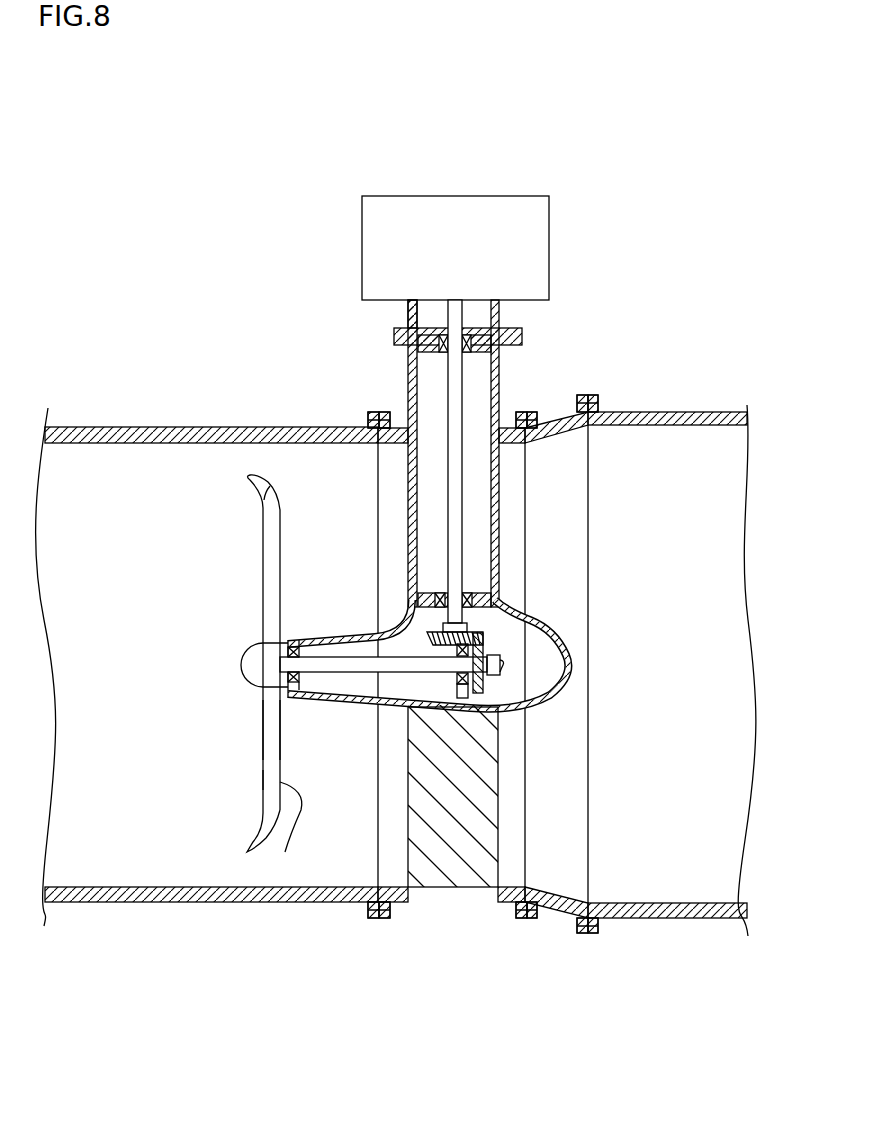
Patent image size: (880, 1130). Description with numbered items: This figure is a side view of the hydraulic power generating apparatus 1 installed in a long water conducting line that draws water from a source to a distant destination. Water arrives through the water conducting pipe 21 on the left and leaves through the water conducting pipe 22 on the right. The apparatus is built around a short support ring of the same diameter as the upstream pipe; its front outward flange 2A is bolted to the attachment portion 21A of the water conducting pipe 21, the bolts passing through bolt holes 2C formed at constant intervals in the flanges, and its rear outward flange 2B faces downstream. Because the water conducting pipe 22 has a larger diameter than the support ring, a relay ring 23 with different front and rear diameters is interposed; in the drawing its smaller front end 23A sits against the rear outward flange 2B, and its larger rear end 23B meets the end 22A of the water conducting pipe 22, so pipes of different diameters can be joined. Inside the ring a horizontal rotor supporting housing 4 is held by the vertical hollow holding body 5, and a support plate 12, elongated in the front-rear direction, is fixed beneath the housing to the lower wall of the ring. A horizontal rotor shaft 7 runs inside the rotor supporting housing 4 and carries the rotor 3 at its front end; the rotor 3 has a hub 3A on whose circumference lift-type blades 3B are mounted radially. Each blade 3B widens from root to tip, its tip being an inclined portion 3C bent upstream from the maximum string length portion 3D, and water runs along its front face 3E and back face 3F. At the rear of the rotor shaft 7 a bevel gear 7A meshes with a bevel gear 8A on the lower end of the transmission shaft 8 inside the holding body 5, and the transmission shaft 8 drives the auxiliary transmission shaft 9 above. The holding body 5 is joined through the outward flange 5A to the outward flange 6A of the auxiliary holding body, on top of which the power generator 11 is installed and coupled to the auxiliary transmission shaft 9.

The hydraulic power generating apparatus 1 is at (300, 220).
The outward flange 2A is at (380, 412).
The outward flange 2B is at (522, 412).
The bolt holes 2C is at (513, 903).
The rotor 3 is at (252, 616).
The hub 3A is at (276, 668).
The lift-type blade 3B is at (264, 724).
The inclined portion 3C is at (249, 479).
The maximum string length portion 3D is at (262, 505).
The front face 3E is at (262, 780).
The back face 3F is at (286, 832).
The rotor supporting housing 4 is at (345, 698).
The holding body 5 is at (408, 490).
The outward flange 5A is at (520, 350).
The outward flange 6A is at (513, 327).
The rotor shaft 7 is at (380, 657).
The bevel gear 7A is at (483, 688).
The transmission shaft 8 is at (462, 497).
The bevel gear 8A is at (485, 631).
The auxiliary transmission shaft 9 is at (408, 309).
The power generator 11 is at (549, 223).
The support plate 12 is at (408, 824).
The water conducting pipe 21 is at (105, 426).
The attachment portion 21A is at (369, 412).
The water conducting pipe 22 is at (720, 411).
The pipe flange 22A is at (600, 397).
The relay ring 23 is at (557, 908).
The reducer flange 23A is at (532, 412).
The reducer flange 23B is at (585, 396).